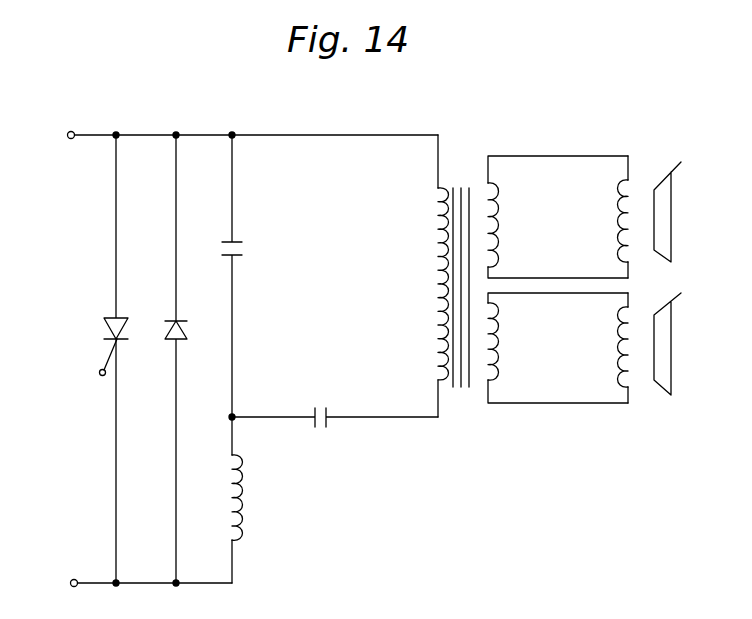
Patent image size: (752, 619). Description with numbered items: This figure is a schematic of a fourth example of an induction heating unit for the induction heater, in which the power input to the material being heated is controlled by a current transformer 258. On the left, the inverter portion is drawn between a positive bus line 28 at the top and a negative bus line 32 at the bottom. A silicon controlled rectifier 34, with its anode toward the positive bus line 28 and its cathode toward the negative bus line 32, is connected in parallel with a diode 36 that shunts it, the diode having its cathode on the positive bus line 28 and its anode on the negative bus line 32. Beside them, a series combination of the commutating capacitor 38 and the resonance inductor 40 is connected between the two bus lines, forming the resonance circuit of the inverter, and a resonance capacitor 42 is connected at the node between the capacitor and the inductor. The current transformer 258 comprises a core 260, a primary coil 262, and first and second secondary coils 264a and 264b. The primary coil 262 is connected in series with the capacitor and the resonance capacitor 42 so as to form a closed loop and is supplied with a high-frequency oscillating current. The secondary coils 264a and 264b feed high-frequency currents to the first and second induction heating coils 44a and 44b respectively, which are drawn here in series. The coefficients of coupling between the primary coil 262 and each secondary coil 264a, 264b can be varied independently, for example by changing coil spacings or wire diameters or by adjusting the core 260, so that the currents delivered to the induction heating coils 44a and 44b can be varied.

The positive bus line 28 is at (97, 138).
The negative bus line 32 is at (97, 580).
The silicon controlled rectifier 34 is at (105, 324).
The diode 36 is at (184, 340).
The commutating capacitor 38 is at (243, 538).
The resonance inductor 40 is at (243, 249).
The resonance capacitor 42 is at (322, 405).
The current transformer 258 is at (461, 158).
The core 260 is at (466, 390).
The primary coil 262 is at (436, 295).
The first secondary coil 264a is at (495, 236).
The second secondary coil 264b is at (498, 339).
The first induction heating coil 44a is at (622, 220).
The second induction heating coil 44b is at (622, 348).